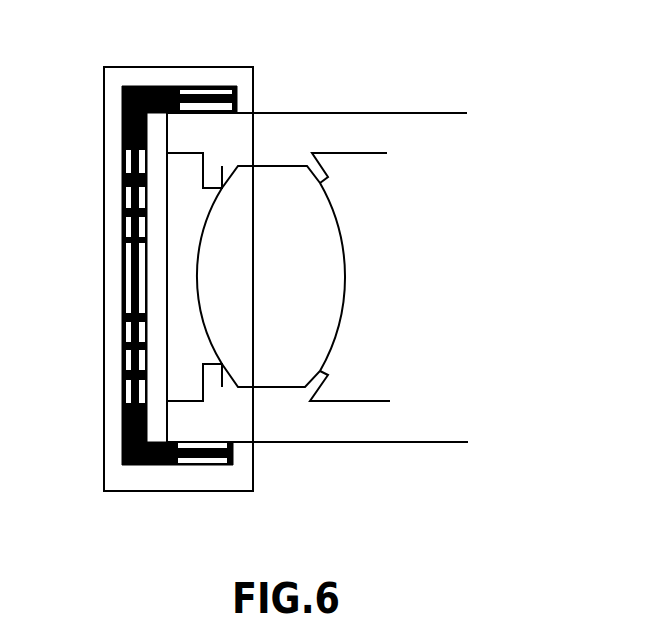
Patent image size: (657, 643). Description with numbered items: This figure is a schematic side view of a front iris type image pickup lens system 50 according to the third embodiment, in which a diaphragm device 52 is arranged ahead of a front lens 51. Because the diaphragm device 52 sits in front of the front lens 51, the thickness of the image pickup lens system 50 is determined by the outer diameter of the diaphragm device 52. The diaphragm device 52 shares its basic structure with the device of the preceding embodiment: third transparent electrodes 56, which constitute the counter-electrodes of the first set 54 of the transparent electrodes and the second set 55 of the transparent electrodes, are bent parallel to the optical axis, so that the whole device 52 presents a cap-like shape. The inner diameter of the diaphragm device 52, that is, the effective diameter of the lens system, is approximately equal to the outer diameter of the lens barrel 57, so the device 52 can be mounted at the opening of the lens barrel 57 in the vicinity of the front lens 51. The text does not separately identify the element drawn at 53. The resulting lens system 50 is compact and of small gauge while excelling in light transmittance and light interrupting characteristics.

The front iris type image pickup lens system 50 is at (298, 295).
The front lens 51 is at (332, 288).
The diaphragm device 52 is at (146, 512).
The elastic member 53 is at (122, 443).
The first set of the transparent electrodes 54 is at (127, 297).
The second set of the transparent electrodes 55 is at (143, 261).
The third transparent electrodes 56 is at (208, 462).
The lens barrel 57 is at (345, 126).